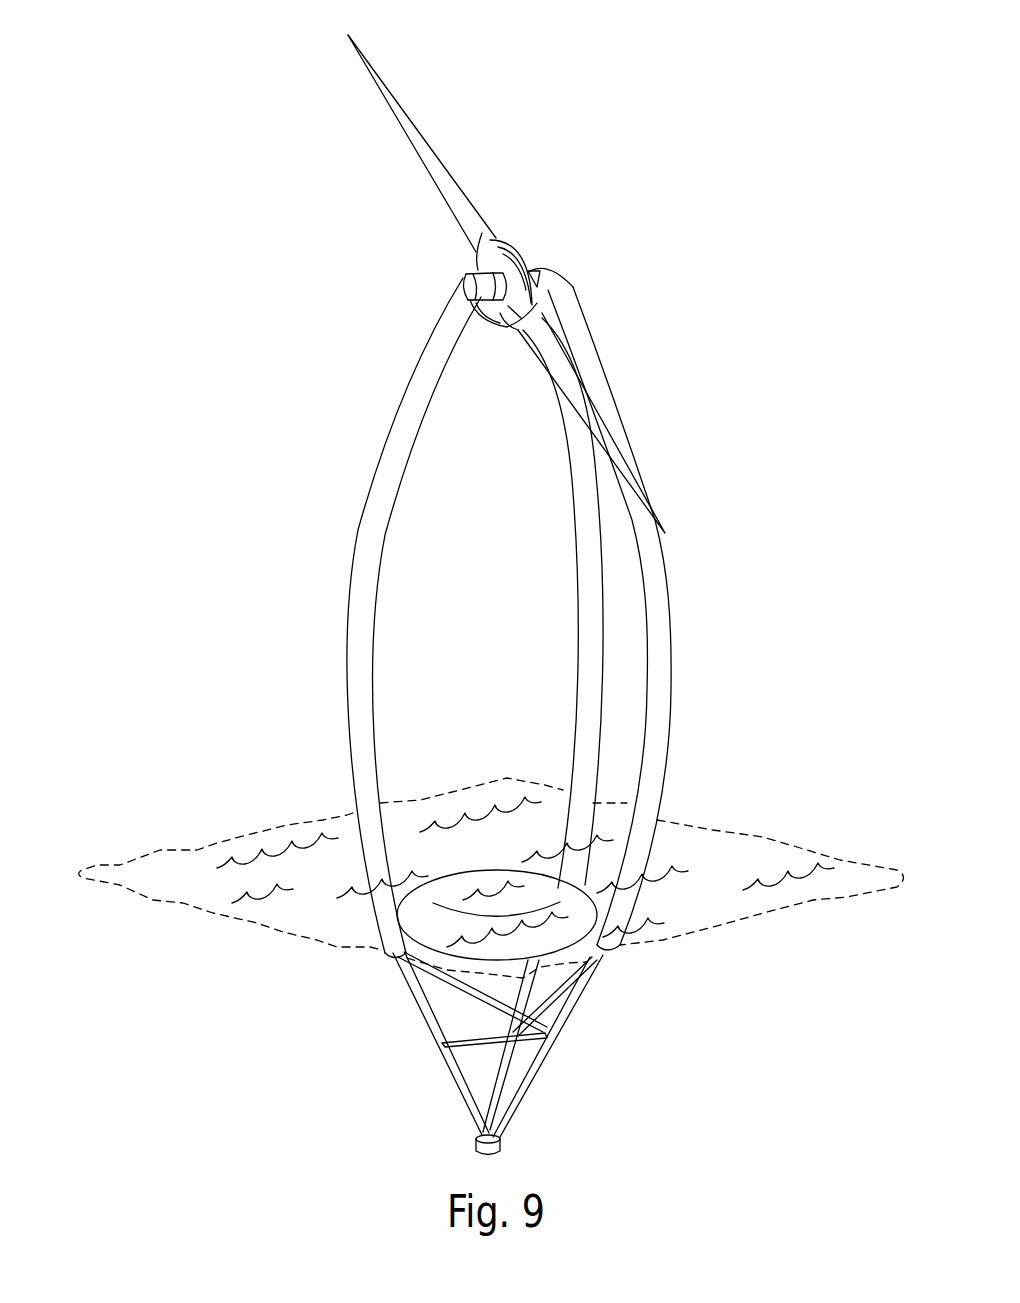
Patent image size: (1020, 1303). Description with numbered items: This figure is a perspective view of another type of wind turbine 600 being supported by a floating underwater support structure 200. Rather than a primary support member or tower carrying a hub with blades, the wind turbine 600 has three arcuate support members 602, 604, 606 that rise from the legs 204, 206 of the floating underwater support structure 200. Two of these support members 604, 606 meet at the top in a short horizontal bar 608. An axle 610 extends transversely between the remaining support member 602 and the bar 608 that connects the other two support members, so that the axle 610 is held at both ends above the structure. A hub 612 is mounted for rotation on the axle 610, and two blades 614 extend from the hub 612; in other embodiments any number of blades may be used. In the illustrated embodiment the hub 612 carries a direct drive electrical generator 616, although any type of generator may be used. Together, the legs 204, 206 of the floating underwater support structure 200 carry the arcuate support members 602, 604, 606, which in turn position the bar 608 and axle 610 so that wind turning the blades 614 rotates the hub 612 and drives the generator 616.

The floating underwater support structure 200 is at (362, 1023).
The leg 204 is at (453, 1075).
The leg 206 is at (570, 1002).
The wind turbine 600 is at (300, 462).
The arcuate support member 602 is at (353, 682).
The arcuate support member 604 is at (660, 685).
The arcuate support member 606 is at (583, 672).
The horizontal bar 608 is at (548, 268).
The axle 610 is at (480, 270).
The hub 612 is at (484, 248).
The blade 614 is at (430, 166).
The direct drive electrical generator 616 is at (492, 318).